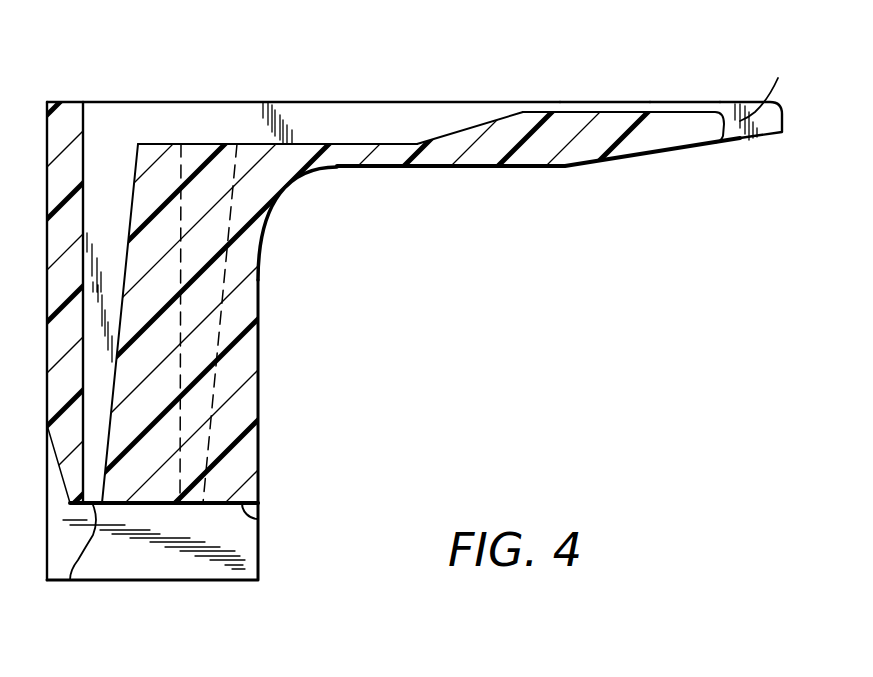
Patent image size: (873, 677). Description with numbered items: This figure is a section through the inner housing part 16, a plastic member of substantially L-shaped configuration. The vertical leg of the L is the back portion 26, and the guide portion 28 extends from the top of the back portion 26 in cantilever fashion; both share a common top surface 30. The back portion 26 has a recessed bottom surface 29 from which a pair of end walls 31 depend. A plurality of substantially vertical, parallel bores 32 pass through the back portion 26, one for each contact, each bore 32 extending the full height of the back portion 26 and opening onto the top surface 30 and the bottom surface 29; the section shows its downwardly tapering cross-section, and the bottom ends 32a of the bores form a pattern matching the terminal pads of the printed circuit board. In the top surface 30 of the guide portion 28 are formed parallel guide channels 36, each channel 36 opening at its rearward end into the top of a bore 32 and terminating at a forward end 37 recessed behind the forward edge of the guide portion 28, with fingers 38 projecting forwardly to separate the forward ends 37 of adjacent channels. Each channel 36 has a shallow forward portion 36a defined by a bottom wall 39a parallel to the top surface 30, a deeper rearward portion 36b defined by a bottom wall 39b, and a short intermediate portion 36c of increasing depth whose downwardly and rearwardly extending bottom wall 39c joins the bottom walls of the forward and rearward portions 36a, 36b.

The inner housing part 16 is at (522, 84).
The back portion 26 is at (258, 383).
The guide portion 28 is at (546, 173).
The bottom surface 29 is at (258, 527).
The top surface 30 is at (736, 104).
The end walls 31 is at (170, 563).
The bores 32 is at (86, 262).
The bottom ends of the bores 32a is at (70, 580).
The guide channel 36 is at (283, 104).
The forward channel portion 36a is at (619, 108).
The rearward channel portion 36b is at (205, 128).
The intermediate channel portion 36c is at (482, 118).
The forward end 37 is at (772, 84).
The fingers 38 is at (784, 124).
The bottom wall of forward channel portion 39a is at (683, 111).
The bottom wall of rearward channel portion 39b is at (337, 143).
The bottom wall of intermediate channel portion 39c is at (447, 137).